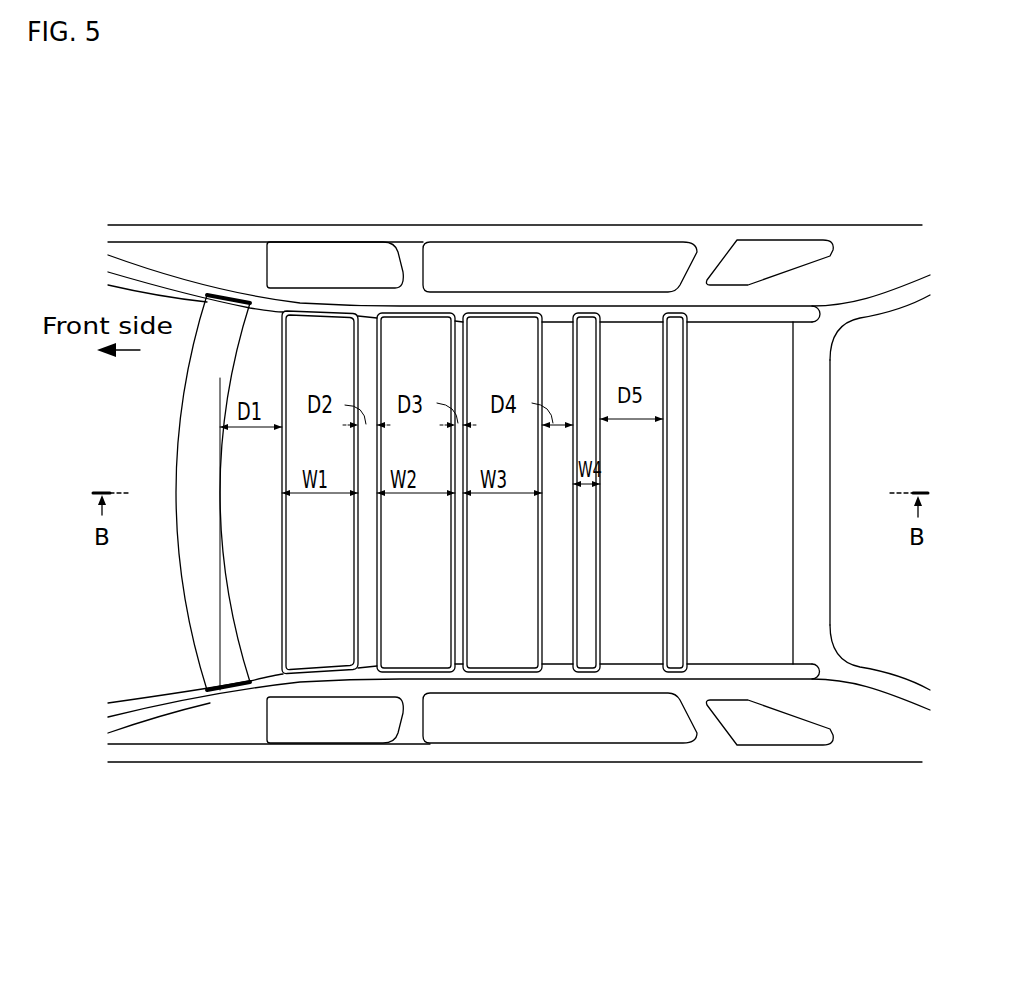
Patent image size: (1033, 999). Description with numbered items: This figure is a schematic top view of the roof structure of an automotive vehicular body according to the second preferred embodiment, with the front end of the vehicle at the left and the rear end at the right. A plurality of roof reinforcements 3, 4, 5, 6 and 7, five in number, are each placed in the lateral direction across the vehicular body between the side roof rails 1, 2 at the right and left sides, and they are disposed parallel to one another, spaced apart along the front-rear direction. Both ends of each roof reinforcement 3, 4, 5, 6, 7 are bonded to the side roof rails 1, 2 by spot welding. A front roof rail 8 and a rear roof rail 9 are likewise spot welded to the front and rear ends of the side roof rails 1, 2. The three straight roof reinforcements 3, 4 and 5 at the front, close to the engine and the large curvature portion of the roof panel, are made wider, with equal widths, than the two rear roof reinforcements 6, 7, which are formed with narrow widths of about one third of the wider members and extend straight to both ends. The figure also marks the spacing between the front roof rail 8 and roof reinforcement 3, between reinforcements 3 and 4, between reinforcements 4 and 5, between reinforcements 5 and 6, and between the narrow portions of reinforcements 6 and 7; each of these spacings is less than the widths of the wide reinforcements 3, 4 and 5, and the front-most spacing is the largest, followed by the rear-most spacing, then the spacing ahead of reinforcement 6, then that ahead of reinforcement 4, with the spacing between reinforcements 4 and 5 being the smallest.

The side roof rail 1 is at (263, 309).
The side roof rail 2 is at (273, 678).
The roof reinforcement 3 is at (328, 330).
The roof reinforcement 4 is at (412, 330).
The roof reinforcement 5 is at (494, 330).
The roof reinforcement 6 is at (585, 328).
The roof reinforcement 7 is at (677, 327).
The front roof rail 8 is at (179, 420).
The rear roof rail 9 is at (807, 375).